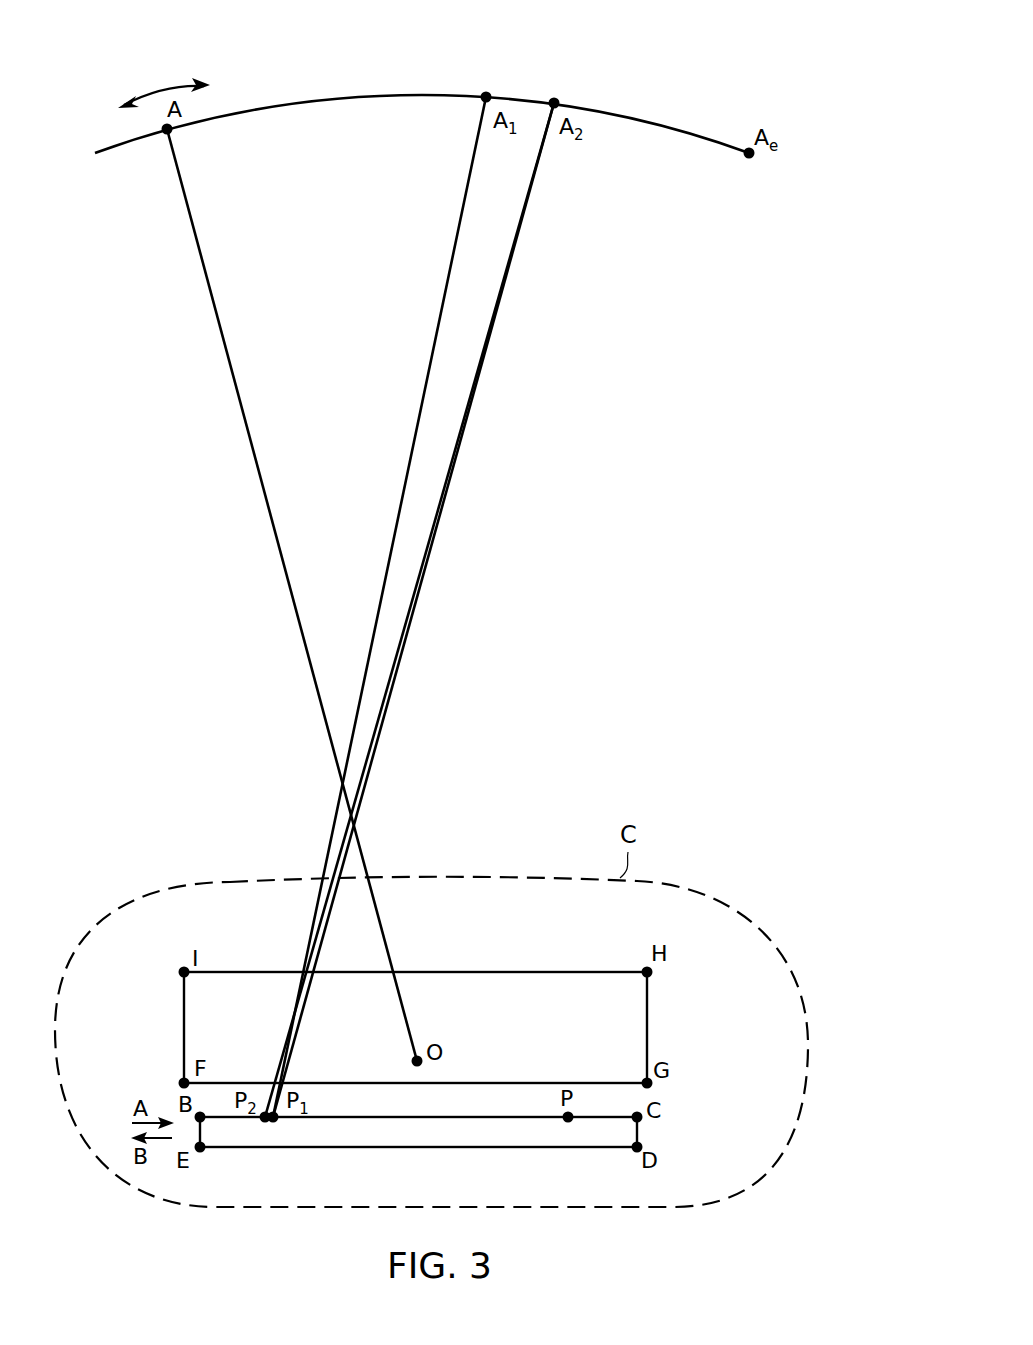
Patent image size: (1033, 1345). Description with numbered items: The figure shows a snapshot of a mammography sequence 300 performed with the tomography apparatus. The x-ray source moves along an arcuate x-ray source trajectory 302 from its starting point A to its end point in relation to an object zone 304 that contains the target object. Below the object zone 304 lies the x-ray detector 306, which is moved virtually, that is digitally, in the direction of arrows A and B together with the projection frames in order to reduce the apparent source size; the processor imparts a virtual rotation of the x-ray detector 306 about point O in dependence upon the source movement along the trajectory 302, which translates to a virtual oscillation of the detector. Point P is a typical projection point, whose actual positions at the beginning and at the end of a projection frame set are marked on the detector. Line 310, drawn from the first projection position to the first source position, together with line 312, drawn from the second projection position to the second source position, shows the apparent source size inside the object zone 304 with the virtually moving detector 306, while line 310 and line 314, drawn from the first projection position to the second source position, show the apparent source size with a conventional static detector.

The mammography sequence 300 is at (664, 57).
The x-ray source trajectory 302 is at (160, 90).
The object zone 304 is at (641, 1028).
The x-ray detector 306 is at (633, 1136).
The line between P1 and A1 310 is at (427, 369).
The line between P2 and A2 312 is at (308, 943).
The line between P1 and A2 314 is at (338, 897).